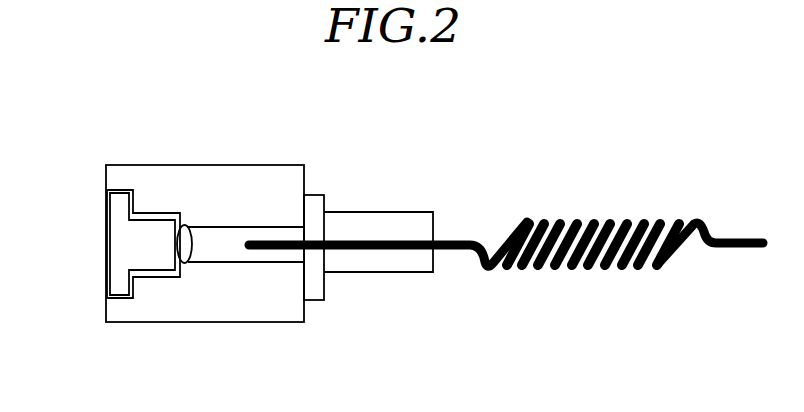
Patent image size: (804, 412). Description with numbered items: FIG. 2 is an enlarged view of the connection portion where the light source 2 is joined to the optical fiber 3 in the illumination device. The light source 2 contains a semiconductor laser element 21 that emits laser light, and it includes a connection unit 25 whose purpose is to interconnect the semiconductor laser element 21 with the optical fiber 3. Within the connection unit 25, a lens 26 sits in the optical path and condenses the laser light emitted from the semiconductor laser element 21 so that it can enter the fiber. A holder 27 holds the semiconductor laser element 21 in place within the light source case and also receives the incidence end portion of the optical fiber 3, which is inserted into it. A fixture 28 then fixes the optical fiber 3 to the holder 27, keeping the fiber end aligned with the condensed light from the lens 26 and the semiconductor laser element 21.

The light source 2 is at (82, 175).
The optical fiber 3 is at (597, 268).
The semiconductor laser element 21 is at (137, 252).
The connection unit 25 is at (249, 159).
The lens 26 is at (167, 300).
The holder 27 is at (187, 263).
The fixture 28 is at (365, 263).